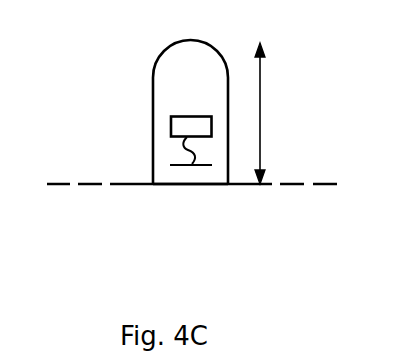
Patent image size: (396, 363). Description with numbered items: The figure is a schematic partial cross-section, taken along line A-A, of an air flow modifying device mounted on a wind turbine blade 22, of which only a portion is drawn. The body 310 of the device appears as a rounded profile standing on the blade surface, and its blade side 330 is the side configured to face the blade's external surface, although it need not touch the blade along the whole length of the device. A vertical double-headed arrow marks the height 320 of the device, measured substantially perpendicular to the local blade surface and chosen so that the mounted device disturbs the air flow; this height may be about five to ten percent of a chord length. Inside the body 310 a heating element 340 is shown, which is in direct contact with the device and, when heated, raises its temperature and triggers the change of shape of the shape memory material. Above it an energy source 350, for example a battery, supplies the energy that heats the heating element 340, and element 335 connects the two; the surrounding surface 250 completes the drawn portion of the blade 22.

The wind turbine blade 22 is at (313, 200).
The surface 250 is at (87, 188).
The body 310 is at (166, 72).
The height 320 is at (262, 115).
The blade side 330 is at (195, 187).
The connector 335 is at (186, 155).
The heating element 340 is at (183, 167).
The energy source 350 is at (173, 127).